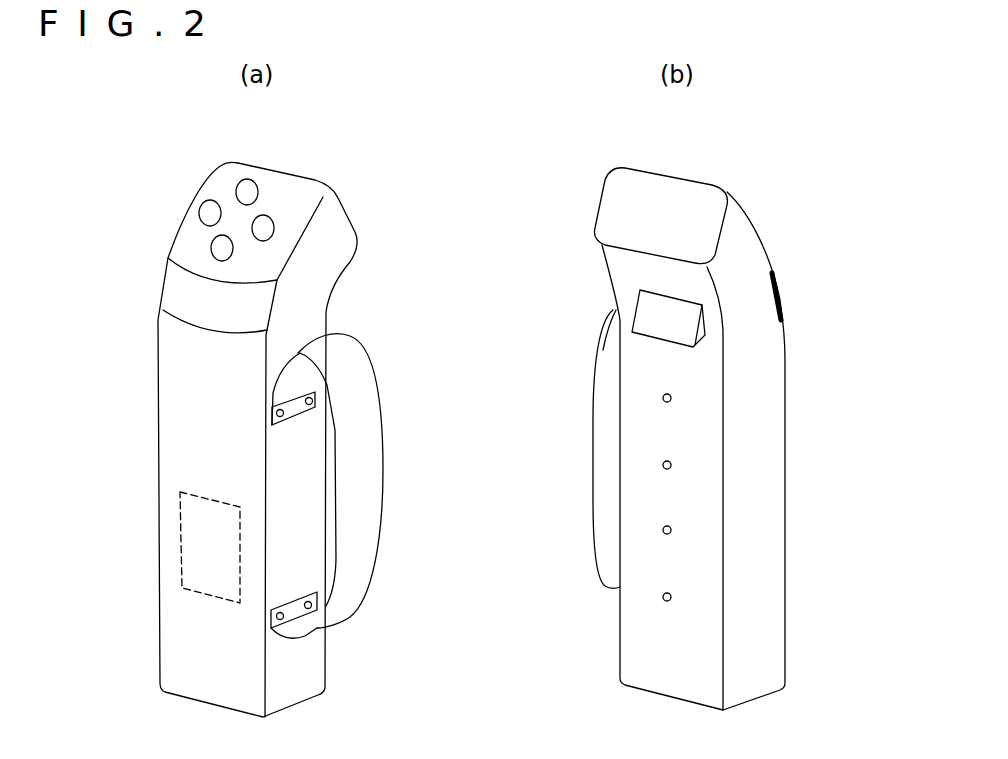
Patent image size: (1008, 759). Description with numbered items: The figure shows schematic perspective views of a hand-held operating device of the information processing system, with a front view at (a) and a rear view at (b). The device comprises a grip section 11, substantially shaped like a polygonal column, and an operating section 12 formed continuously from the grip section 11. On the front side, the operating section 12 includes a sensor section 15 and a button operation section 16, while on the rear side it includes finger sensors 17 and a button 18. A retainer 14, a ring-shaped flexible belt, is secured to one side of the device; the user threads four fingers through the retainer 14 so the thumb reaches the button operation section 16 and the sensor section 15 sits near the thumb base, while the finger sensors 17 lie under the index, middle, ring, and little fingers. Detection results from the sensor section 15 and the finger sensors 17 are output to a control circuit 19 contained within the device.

The grip section 11 is at (154, 458).
The operating section 12 is at (106, 170).
The retainer 14 is at (362, 528).
The sensor section 15 is at (182, 292).
The button operation section 16 is at (221, 190).
The finger sensors 17 is at (677, 404).
The button 18 is at (667, 328).
The control circuit 19 is at (182, 566).